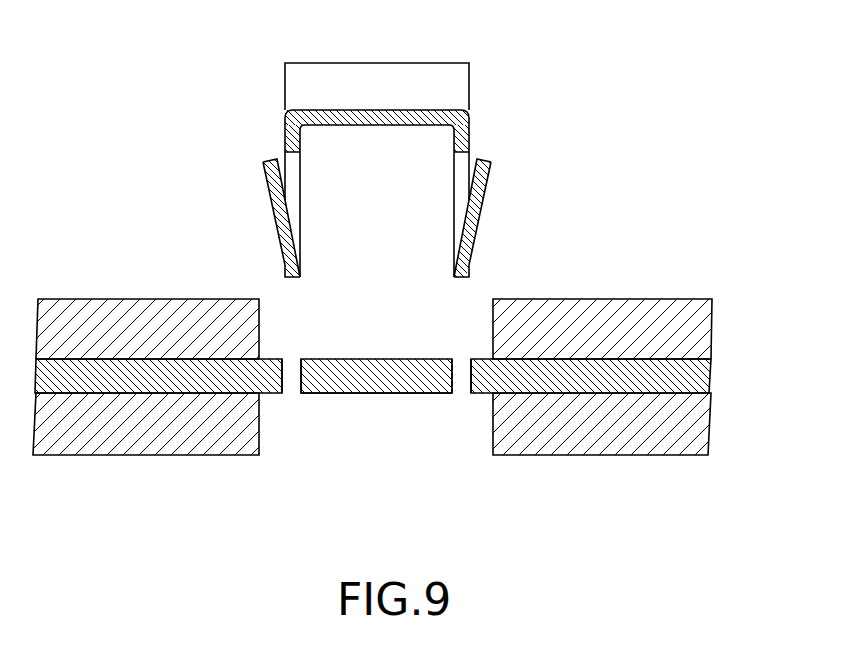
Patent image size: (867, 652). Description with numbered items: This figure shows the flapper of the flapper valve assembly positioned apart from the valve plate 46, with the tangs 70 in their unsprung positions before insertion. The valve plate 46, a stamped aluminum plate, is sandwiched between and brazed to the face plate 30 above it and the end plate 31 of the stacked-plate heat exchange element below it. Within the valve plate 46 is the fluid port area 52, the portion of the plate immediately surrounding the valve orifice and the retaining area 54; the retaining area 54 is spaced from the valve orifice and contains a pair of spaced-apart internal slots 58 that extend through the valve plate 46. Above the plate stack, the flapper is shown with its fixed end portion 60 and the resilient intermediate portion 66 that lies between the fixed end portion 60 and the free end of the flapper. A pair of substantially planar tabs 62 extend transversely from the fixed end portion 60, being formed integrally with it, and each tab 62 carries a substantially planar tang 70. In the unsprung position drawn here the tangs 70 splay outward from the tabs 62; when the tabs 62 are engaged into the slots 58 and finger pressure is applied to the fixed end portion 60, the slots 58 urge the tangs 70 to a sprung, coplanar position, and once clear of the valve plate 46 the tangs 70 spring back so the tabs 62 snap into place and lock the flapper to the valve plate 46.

The face plate 30 is at (695, 325).
The end plate 31 is at (692, 422).
The valve plate 46 is at (695, 378).
The fluid port area 52 is at (348, 375).
The retaining area 54 is at (348, 394).
The slots 58 is at (291, 400).
The fixed end portion 60 is at (443, 110).
The tabs 62 is at (290, 165).
The resilient intermediate portion 66 is at (396, 74).
The tangs 70 is at (279, 232).